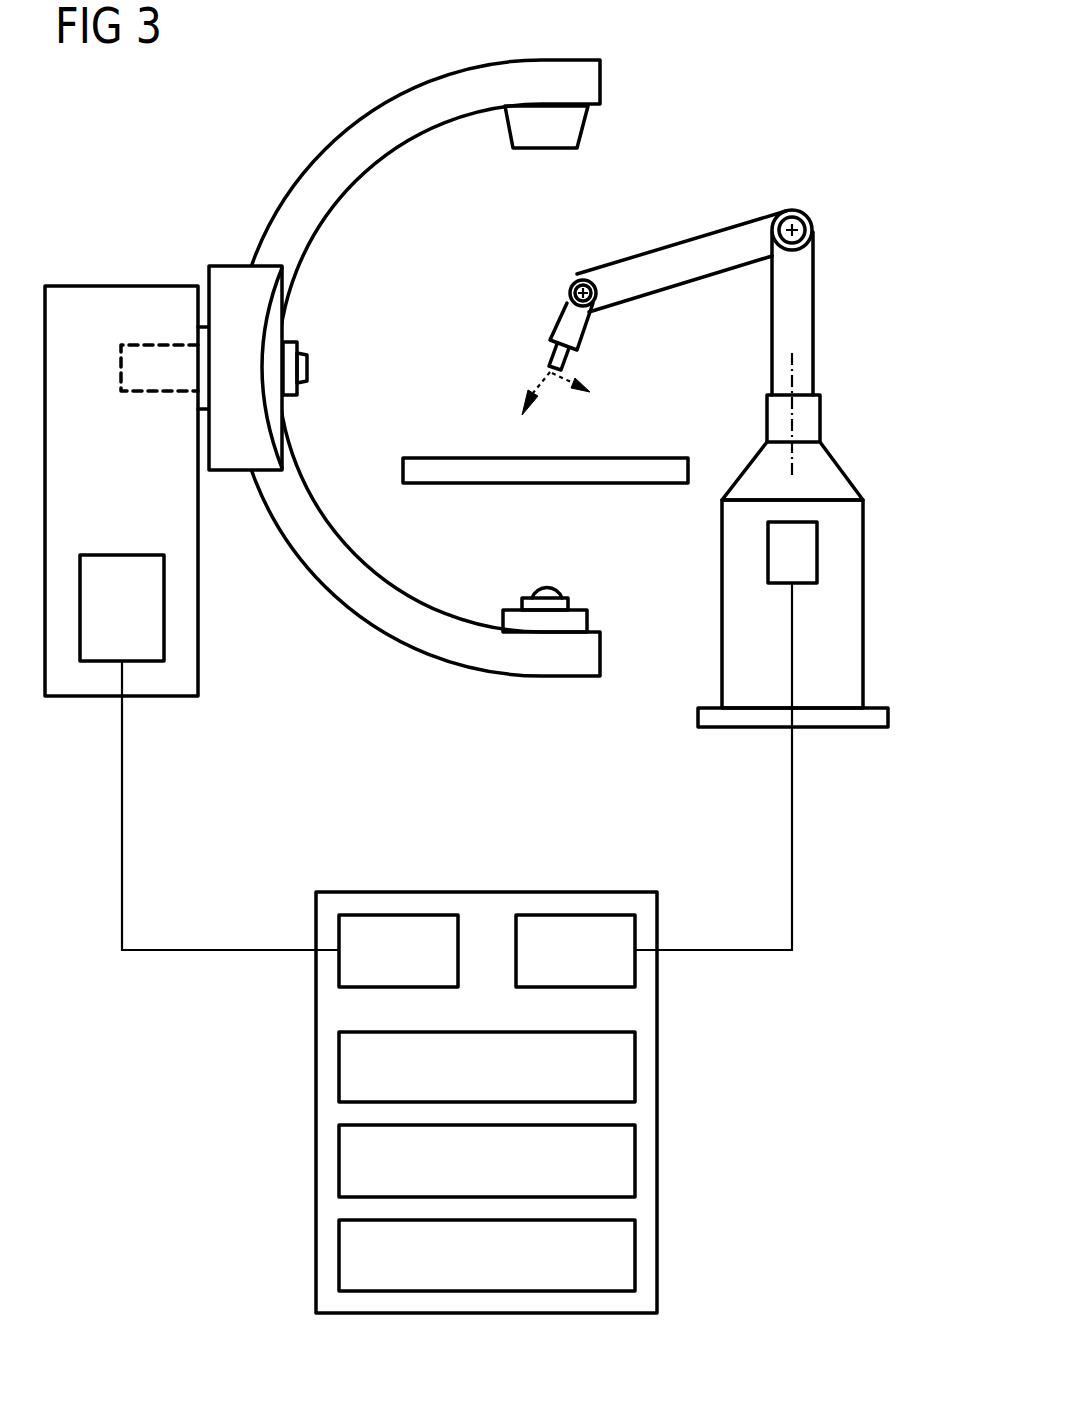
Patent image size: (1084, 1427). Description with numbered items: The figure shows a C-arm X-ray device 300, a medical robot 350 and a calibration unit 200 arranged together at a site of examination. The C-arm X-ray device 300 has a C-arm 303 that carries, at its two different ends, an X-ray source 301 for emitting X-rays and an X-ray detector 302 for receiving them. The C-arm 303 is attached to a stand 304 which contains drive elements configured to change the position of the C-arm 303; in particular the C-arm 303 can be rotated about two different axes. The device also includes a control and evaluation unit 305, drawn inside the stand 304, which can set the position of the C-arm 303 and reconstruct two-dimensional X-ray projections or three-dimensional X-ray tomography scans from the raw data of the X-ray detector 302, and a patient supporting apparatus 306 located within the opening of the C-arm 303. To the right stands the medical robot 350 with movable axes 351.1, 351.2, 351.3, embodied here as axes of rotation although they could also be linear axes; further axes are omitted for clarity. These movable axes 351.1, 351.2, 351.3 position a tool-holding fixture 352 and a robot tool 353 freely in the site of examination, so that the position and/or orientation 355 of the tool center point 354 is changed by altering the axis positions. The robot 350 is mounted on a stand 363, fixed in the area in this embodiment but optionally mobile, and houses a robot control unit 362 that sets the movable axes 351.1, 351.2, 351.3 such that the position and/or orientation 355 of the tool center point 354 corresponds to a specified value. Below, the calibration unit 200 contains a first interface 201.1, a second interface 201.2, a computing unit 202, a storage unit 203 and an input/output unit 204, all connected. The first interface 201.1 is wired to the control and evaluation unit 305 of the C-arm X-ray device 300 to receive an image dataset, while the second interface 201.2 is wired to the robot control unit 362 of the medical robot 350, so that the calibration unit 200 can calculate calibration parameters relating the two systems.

The C-arm X-ray device 300 is at (178, 166).
The C-arm 303 is at (333, 158).
The X-ray detector 302 is at (562, 129).
The X-ray source 301 is at (560, 604).
The stand 304 is at (118, 285).
The control and evaluation unit 305 is at (164, 614).
The patient supporting apparatus 306 is at (437, 467).
The medical robot 350 is at (878, 337).
The movable axis 351.1 is at (820, 413).
The movable axis 351.2 is at (812, 213).
The movable axis 351.3 is at (575, 283).
The tool-holding fixture 352 is at (566, 302).
The robot tool 353 is at (552, 346).
The tool center point 354 is at (535, 388).
The position and/or orientation 355 is at (537, 407).
The robot control unit 362 is at (817, 553).
The stand 363 is at (863, 655).
The calibration unit 200 is at (485, 890).
The first interface 201.1 is at (339, 927).
The second interface 201.2 is at (635, 927).
The computing unit 202 is at (635, 1066).
The storage unit 203 is at (635, 1157).
The input/output unit 204 is at (635, 1252).